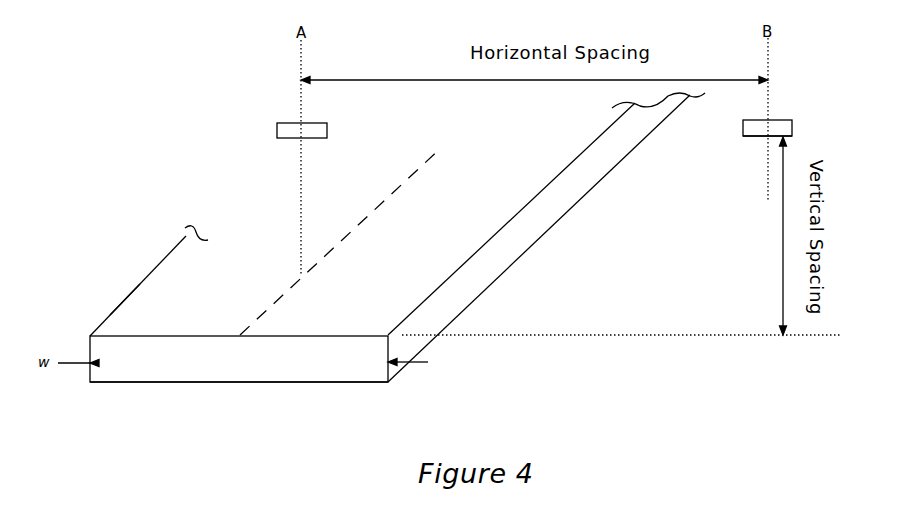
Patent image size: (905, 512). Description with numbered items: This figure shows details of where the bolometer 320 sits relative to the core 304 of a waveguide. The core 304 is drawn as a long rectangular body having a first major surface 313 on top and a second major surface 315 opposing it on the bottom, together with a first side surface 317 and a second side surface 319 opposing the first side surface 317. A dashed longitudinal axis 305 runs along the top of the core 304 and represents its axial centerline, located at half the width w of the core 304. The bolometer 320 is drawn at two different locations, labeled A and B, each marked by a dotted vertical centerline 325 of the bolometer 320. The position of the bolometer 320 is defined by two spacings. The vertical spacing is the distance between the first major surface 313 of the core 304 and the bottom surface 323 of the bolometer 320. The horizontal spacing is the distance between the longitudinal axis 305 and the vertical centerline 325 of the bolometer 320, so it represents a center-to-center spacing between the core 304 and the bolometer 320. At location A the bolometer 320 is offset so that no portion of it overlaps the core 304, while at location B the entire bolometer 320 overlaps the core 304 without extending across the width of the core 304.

The core 304 is at (255, 363).
The longitudinal axis 305 is at (358, 224).
The first major surface 313 is at (198, 282).
The second major surface 315 is at (171, 395).
The first side surface 317 is at (472, 280).
The second side surface 319 is at (119, 291).
The bolometer 320 is at (792, 127).
The bottom surface 323 is at (757, 137).
The vertical centerline 325 is at (301, 192).